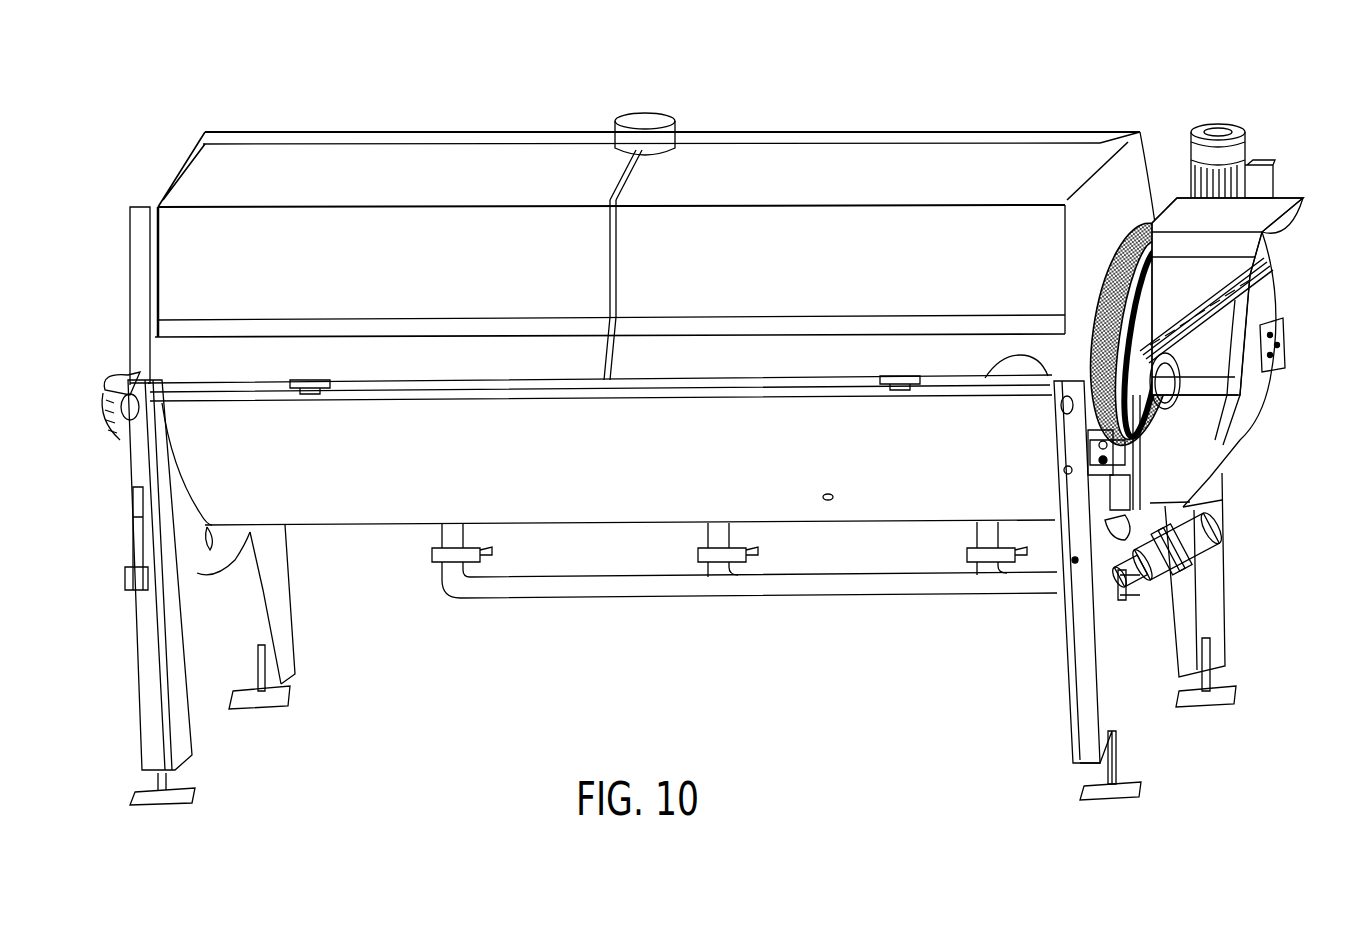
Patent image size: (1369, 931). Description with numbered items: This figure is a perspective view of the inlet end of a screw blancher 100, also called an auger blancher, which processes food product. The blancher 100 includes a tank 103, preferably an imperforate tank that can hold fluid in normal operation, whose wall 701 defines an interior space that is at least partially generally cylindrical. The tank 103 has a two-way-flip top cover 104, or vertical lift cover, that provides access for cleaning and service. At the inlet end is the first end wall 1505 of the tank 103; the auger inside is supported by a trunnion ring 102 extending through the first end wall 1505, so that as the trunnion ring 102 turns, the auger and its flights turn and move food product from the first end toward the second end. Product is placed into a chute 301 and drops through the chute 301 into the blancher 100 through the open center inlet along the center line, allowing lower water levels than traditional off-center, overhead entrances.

The screw blancher 100 is at (1052, 90).
The two-way-flip top cover 104 is at (328, 168).
The wall 701 is at (700, 242).
The tank 103 is at (381, 495).
The trunnion ring 102 is at (1163, 305).
The first end wall 1505 is at (1120, 165).
The chute 301 is at (1272, 212).